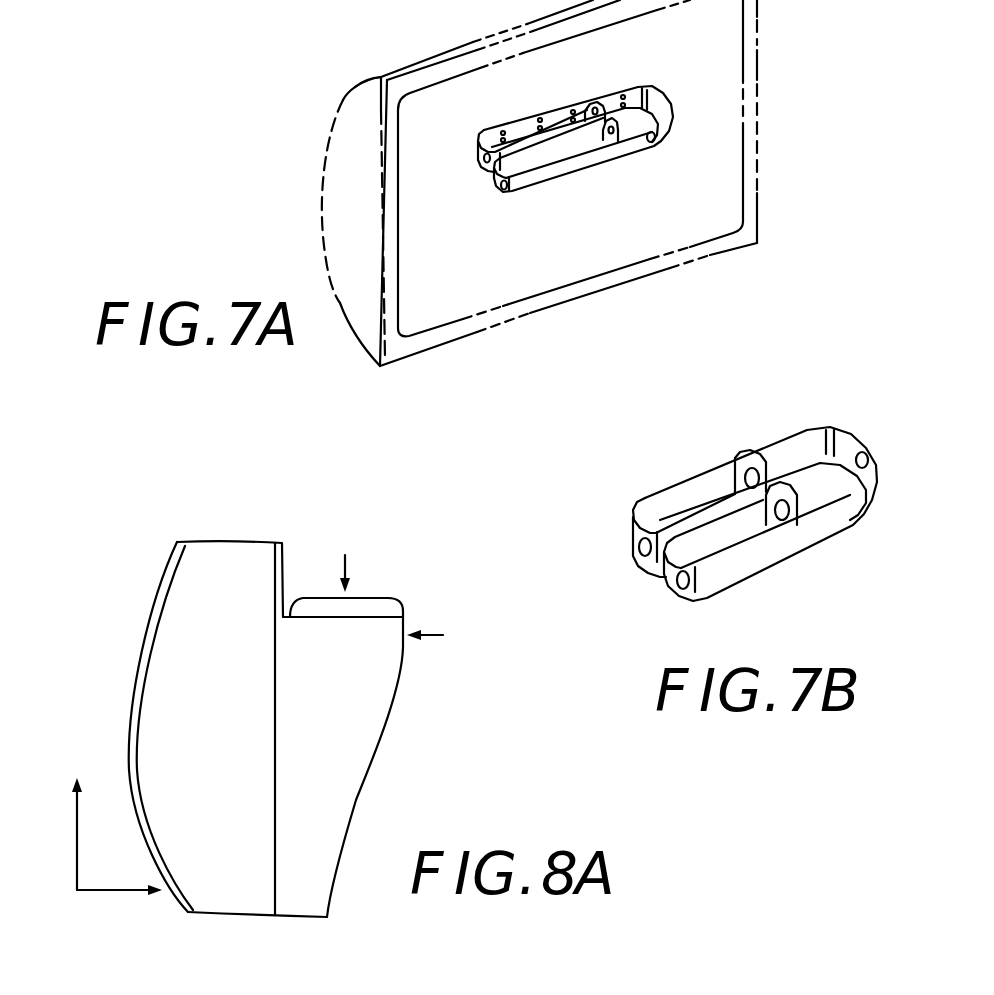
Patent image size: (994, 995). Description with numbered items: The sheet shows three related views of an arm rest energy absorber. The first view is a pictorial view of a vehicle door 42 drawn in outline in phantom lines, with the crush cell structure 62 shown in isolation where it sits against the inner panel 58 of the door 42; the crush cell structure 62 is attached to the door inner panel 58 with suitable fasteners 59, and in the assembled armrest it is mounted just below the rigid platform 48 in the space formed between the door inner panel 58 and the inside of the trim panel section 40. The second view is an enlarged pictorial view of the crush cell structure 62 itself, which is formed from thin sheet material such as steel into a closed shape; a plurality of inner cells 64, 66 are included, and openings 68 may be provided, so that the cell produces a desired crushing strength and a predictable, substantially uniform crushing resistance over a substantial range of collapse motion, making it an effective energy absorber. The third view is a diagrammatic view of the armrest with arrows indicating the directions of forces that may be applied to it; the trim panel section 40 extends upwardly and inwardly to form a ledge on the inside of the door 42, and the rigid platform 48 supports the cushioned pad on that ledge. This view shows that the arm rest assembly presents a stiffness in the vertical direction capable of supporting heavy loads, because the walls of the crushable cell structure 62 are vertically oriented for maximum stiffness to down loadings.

In FIG. 7A, the trim panel section 40 is at (512, 168).
In FIG. 7A, the vehicle door 42 is at (333, 208).
In FIG. 8A, the rigid platform 48 is at (313, 620).
In FIG. 7A, the inner panel 58 is at (206, 0).
In FIG. 7A, the fasteners 59 is at (550, 116).
In FIG. 7A, the crush cell structure 62 is at (648, 104).
In FIG. 7B, the crush cell structure 62 is at (726, 509).
In FIG. 7B, the inner cell 64 is at (647, 500).
In FIG. 7B, the inner cell 66 is at (707, 543).
In FIG. 7B, the mounting holes 68 is at (635, 537).